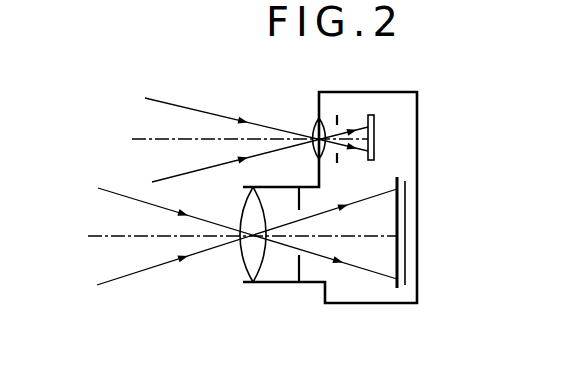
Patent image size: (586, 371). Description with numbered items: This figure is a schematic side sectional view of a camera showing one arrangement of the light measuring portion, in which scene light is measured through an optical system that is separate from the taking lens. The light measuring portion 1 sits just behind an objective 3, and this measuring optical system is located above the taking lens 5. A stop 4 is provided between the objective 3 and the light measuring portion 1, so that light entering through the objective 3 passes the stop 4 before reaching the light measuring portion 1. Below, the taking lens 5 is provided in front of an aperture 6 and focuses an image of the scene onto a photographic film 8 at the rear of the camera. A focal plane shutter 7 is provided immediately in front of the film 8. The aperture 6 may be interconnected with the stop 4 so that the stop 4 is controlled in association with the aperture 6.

The light measuring portion 1 is at (375, 137).
The objective 3 is at (316, 129).
The stop 4 is at (338, 121).
The taking lens 5 is at (251, 252).
The aperture 6 is at (301, 267).
The focal plane shutter 7 is at (396, 285).
The photographic film 8 is at (407, 243).